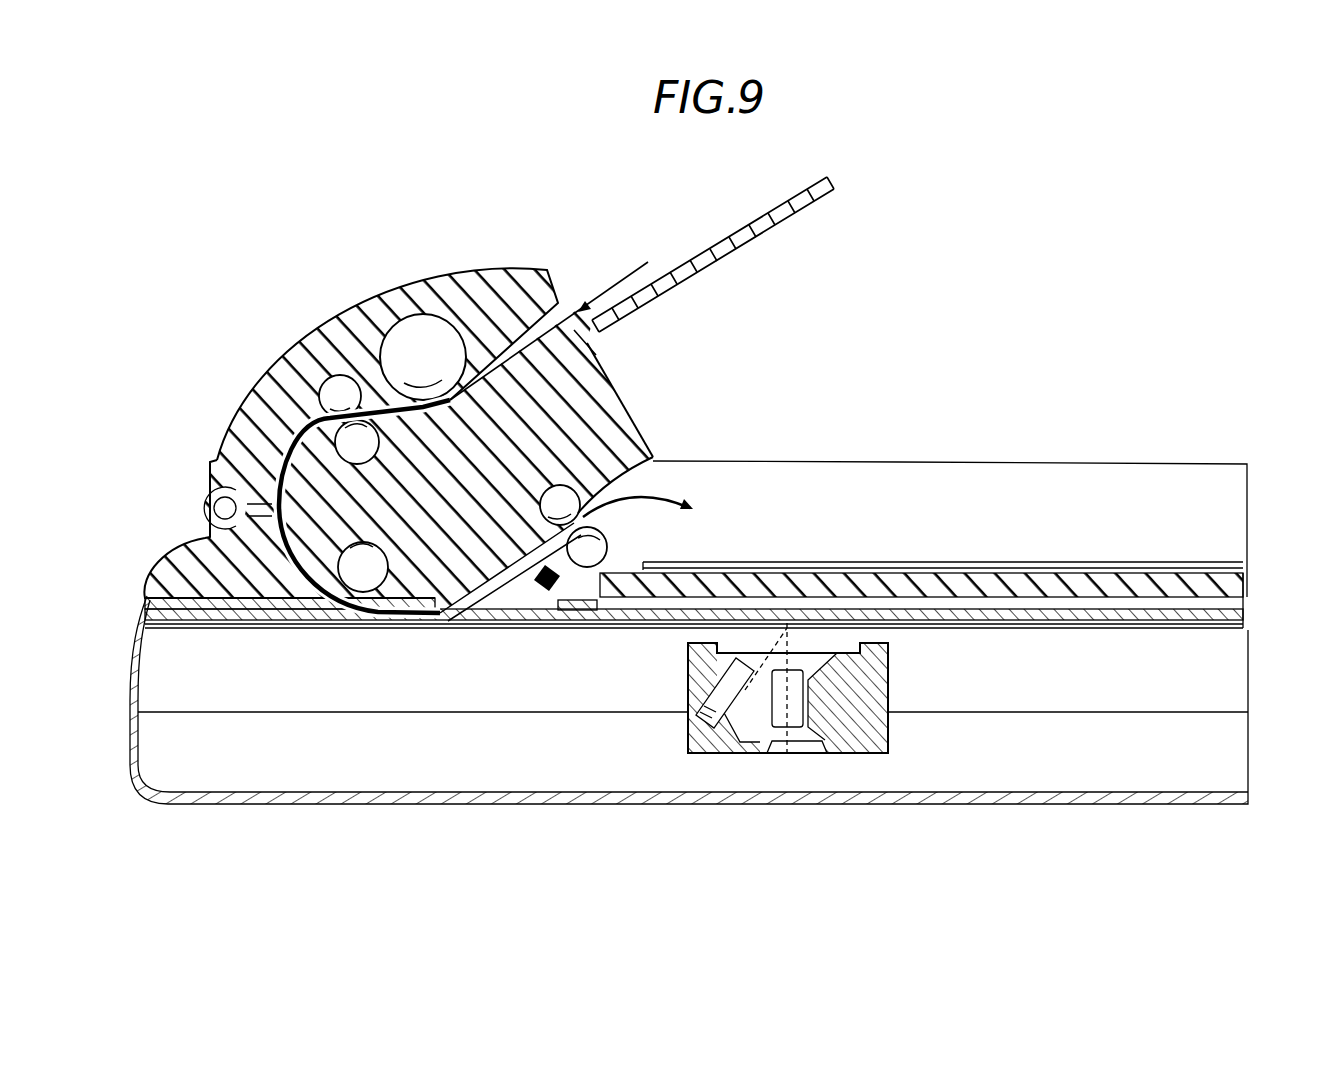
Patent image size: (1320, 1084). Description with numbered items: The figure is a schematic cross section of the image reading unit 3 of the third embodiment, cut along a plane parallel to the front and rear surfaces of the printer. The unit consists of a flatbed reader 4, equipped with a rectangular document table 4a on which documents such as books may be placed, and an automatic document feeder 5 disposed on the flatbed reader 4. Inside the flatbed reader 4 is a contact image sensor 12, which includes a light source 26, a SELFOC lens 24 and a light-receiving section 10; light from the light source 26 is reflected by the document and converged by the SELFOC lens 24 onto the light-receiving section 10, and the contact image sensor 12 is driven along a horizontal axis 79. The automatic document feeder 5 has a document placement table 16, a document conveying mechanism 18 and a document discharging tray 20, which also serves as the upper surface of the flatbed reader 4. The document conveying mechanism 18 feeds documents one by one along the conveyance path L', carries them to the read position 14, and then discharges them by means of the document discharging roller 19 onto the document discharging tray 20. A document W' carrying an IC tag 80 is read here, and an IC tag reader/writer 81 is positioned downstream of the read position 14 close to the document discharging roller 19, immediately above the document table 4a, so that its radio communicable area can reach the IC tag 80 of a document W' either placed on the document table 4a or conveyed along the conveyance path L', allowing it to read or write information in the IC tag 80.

The image reading unit 3 is at (928, 284).
The flatbed reader 4 is at (1182, 804).
The document table 4a is at (1242, 615).
The automatic document feeder 5 is at (442, 277).
The light-receiving section 10 is at (772, 754).
The contact image sensor 12 is at (688, 662).
The read position 14 is at (427, 627).
The document placement table 16 is at (712, 258).
The document conveying mechanism 18 is at (268, 392).
The document discharging roller 19 is at (612, 410).
The document discharging tray 20 is at (793, 573).
The SELFOC lens 24 is at (824, 754).
The light source 26 is at (690, 754).
The axis 79 is at (1180, 711).
The IC tag 80 is at (675, 560).
The IC tag reader/writer 81 is at (552, 592).
The conveyance path L' is at (549, 294).
The document W' is at (975, 560).